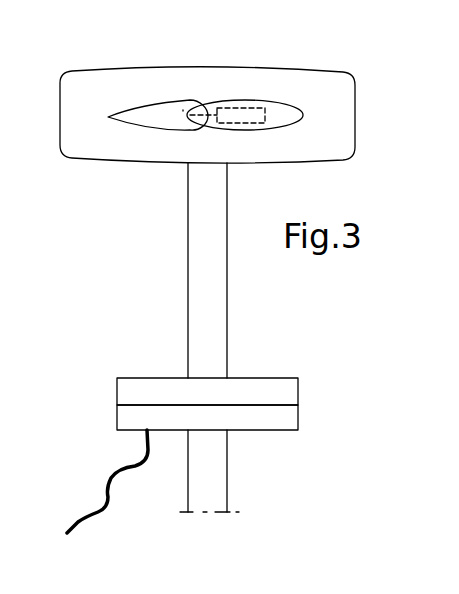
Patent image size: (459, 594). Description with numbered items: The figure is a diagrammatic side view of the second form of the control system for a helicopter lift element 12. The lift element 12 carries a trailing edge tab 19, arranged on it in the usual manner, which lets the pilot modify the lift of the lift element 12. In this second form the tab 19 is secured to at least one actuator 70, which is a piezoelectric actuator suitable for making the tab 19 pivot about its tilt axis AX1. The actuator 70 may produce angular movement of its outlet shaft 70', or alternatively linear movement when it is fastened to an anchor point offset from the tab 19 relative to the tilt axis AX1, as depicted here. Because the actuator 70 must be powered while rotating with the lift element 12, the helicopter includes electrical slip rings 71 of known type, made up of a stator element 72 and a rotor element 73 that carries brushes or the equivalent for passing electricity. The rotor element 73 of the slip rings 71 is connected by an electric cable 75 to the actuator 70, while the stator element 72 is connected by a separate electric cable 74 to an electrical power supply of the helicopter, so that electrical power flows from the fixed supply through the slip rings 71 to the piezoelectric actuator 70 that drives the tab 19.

The lift element 12 is at (304, 106).
The trailing edge tab 19 is at (140, 107).
The tilt axis AX1 is at (183, 110).
The actuator 70 is at (248, 79).
The outlet shaft 70' is at (169, 136).
The electric cable 75 is at (195, 218).
The electrical slip rings 71 is at (155, 409).
The rotor element 73 is at (250, 385).
The stator element 72 is at (263, 422).
The electric cable 74 is at (108, 473).